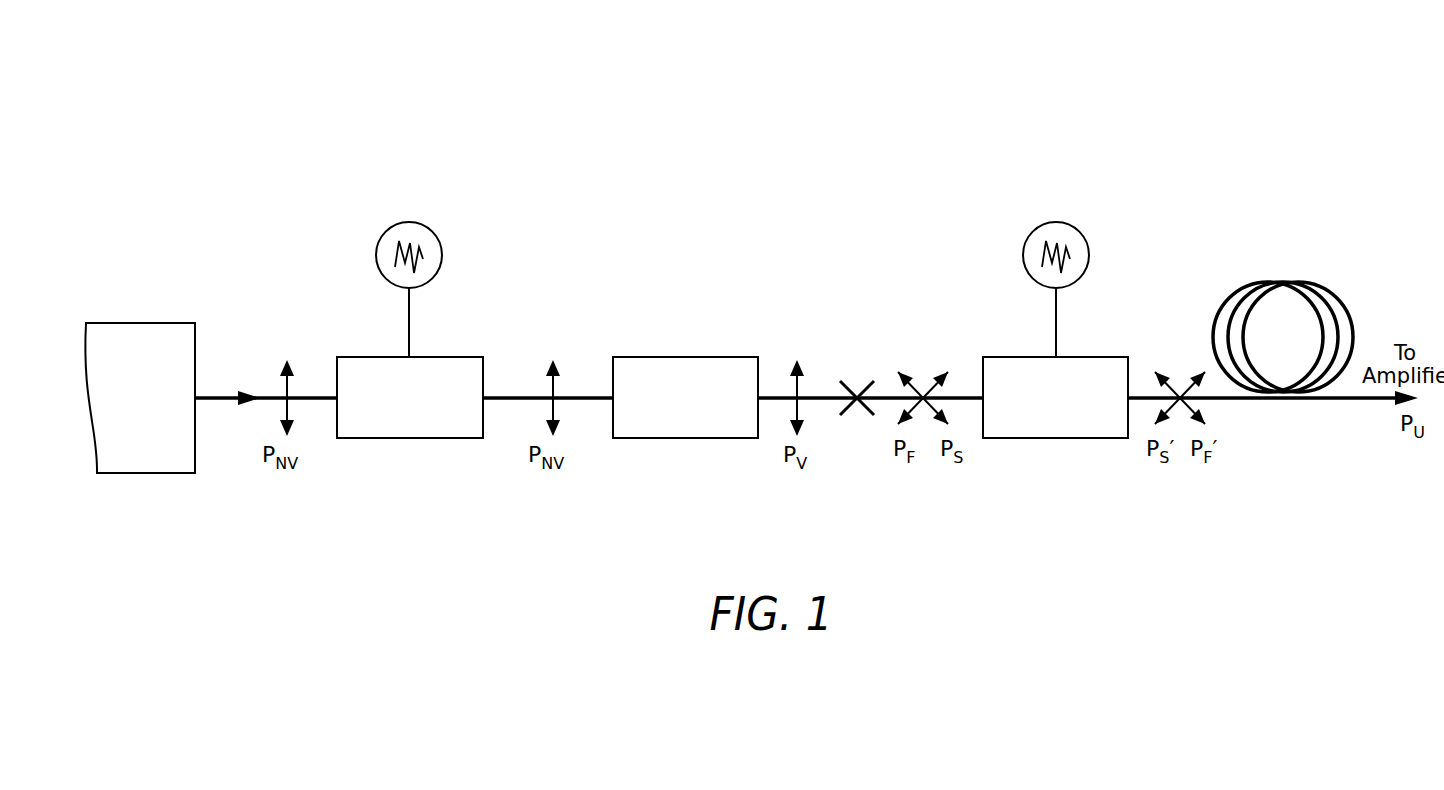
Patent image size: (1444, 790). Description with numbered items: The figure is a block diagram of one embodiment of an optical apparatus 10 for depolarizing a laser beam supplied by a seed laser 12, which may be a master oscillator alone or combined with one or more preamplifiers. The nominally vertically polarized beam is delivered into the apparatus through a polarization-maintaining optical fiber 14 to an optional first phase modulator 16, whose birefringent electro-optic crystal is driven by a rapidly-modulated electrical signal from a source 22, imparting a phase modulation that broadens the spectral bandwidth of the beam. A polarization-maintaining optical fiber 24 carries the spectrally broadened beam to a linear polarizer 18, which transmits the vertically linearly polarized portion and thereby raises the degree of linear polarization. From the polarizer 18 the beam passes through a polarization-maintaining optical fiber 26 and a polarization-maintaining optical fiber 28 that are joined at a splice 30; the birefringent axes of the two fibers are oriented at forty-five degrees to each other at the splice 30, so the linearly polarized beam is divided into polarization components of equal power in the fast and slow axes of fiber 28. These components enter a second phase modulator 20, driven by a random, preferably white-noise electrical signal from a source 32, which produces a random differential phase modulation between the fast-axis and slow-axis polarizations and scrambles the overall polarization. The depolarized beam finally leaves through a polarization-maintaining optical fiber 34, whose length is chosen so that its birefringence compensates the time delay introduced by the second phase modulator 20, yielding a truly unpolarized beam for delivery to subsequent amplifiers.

The optical apparatus 10 is at (572, 114).
The seed laser 12 is at (145, 332).
The polarization-maintaining optical fiber 14 is at (223, 392).
The first phase modulator 16 is at (442, 432).
The linear polarizer 18 is at (705, 363).
The second phase modulator 20 is at (1028, 433).
The source 22 is at (392, 232).
The polarization-maintaining optical fiber 24 is at (515, 393).
The polarization-maintaining optical fiber 26 is at (820, 403).
The polarization-maintaining optical fiber 28 is at (965, 392).
The splice 30 is at (855, 387).
The source 32 is at (1037, 235).
The polarization-maintaining optical fiber 34 is at (1252, 280).